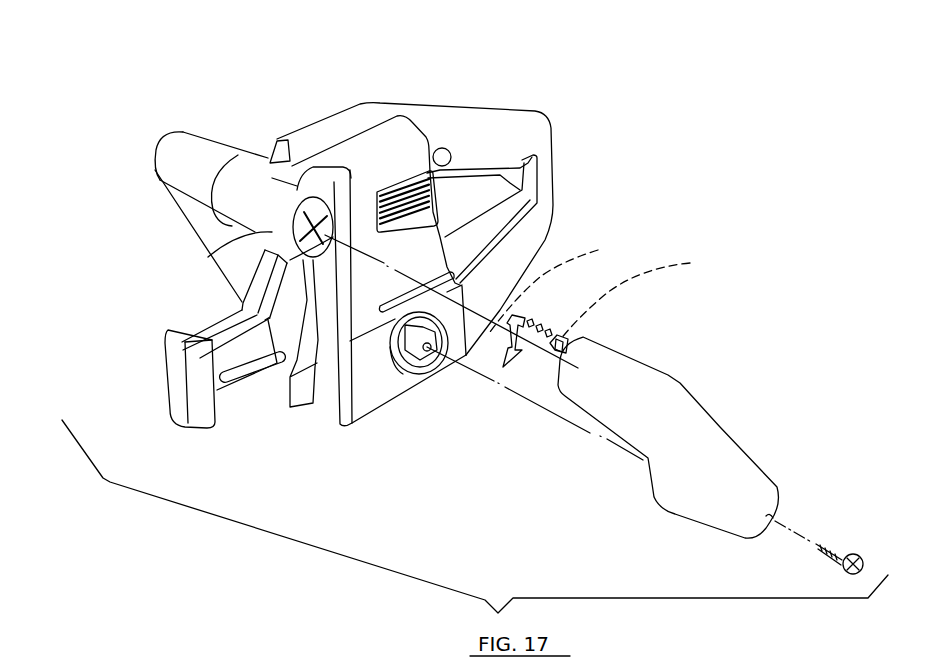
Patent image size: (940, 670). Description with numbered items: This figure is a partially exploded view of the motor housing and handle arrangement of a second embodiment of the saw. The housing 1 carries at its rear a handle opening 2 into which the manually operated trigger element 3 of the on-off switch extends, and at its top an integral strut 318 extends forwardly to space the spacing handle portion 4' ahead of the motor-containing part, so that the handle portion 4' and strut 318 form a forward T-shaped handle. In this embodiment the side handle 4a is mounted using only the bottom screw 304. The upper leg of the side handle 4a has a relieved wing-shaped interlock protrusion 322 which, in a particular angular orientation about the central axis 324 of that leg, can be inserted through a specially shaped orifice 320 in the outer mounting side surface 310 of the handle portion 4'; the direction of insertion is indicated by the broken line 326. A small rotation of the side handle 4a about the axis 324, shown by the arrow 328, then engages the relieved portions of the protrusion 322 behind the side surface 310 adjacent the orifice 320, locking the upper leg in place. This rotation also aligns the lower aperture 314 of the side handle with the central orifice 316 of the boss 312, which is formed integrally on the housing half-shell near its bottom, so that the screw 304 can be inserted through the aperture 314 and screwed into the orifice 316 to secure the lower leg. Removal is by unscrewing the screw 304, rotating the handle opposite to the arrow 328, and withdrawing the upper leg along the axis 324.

The housing 1 is at (363, 392).
The handle opening 2 is at (493, 178).
The trigger element 3 is at (452, 172).
The spacing handle portion 4' is at (219, 153).
The side handle 4a is at (192, 210).
The screw 304 is at (837, 548).
The outer mounting side surface 310 is at (230, 245).
The boss 312 is at (410, 372).
The lower aperture 314 is at (770, 518).
The central orifice 316 is at (427, 351).
The strut 318 is at (272, 166).
The orifice 320 is at (284, 398).
The interlock protrusion 322 is at (560, 341).
The central axis 324 is at (561, 283).
The broken line 326 is at (639, 297).
The arrow 328 is at (528, 346).